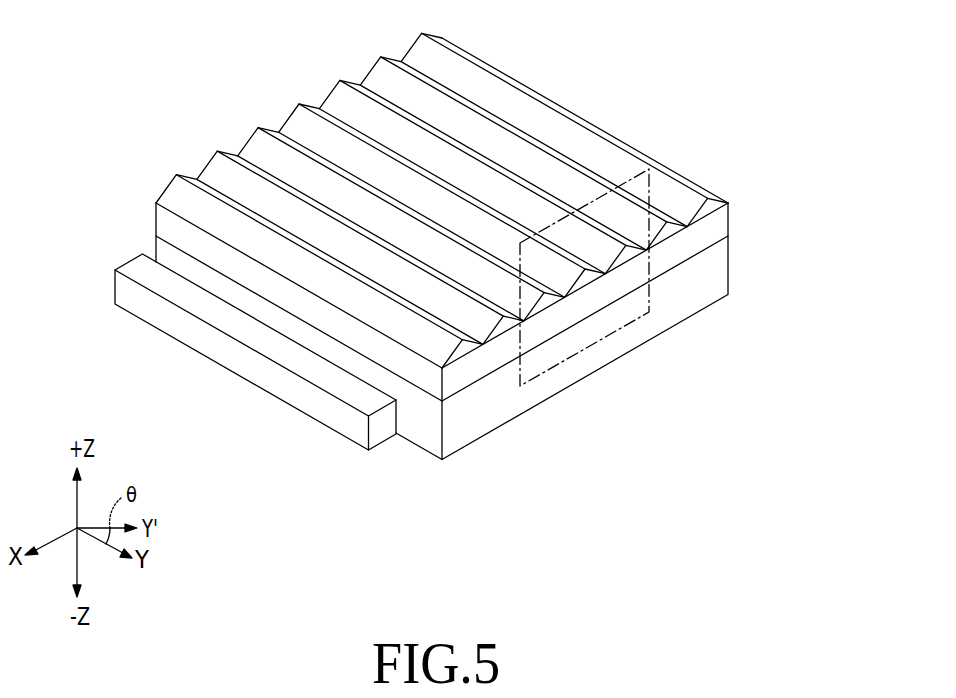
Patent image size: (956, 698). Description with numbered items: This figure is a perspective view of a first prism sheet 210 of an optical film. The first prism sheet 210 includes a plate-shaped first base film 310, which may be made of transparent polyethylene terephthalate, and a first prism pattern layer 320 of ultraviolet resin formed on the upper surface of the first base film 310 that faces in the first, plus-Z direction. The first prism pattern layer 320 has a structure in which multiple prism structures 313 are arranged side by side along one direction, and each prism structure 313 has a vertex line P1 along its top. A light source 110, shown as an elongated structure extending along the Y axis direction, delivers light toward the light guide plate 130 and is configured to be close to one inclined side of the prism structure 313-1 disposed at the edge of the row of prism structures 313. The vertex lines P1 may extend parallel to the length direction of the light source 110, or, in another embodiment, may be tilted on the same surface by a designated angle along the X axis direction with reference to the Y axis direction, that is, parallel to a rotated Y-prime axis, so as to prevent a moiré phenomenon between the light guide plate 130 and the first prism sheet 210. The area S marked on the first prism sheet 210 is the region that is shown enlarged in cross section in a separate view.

The prism structure 313 is at (341, 99).
The prism structure disposed at the edge 313-1 is at (233, 232).
The vertex line P1 is at (193, 185).
The first prism pattern layer 320 is at (442, 192).
The first base film 310 is at (482, 302).
The first prism sheet 210 is at (471, 208).
The light guide plate 130 is at (497, 408).
The light source 110 is at (302, 395).
The area S is at (600, 340).